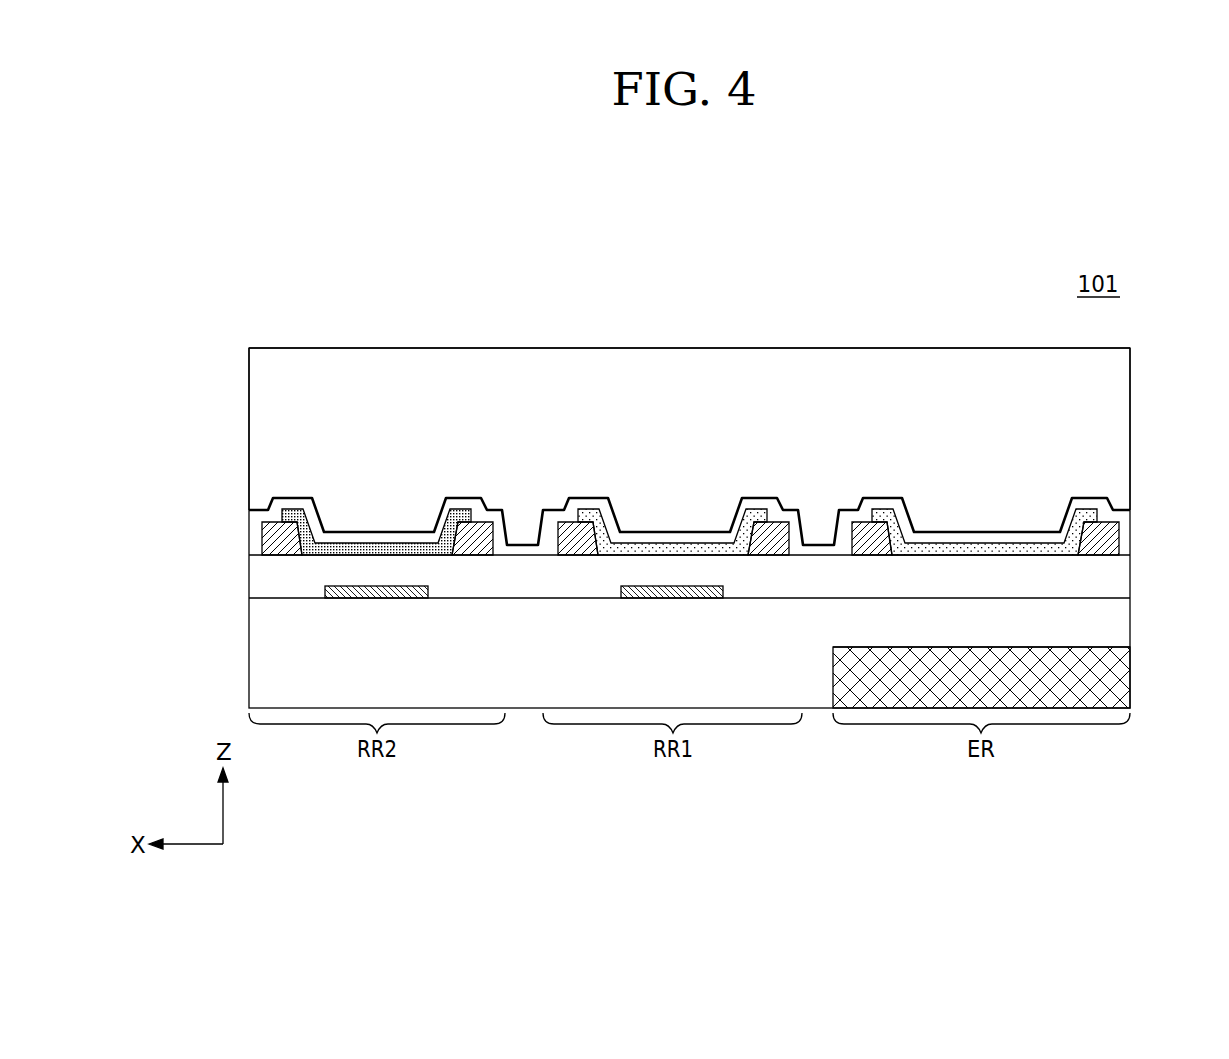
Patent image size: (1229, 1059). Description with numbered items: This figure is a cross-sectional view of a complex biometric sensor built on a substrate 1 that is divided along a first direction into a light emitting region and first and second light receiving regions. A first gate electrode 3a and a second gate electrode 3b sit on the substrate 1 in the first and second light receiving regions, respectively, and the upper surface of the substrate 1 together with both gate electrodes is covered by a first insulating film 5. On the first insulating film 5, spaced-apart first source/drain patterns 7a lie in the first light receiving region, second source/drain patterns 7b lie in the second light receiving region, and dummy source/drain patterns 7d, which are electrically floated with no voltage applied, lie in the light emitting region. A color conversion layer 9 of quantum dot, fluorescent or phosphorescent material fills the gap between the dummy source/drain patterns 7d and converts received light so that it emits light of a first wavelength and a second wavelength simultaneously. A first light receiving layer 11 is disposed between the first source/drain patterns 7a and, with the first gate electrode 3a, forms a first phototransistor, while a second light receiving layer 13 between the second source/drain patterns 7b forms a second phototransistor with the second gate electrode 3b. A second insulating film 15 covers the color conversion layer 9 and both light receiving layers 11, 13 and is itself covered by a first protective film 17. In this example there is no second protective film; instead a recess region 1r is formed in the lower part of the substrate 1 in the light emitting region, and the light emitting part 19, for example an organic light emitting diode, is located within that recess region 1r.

The substrate 1 is at (258, 650).
The recess region 1r is at (897, 647).
The first gate electrode 3a is at (674, 592).
The second gate electrode 3b is at (378, 592).
The first insulating film 5 is at (1122, 578).
The first source/drain patterns 7a is at (574, 528).
The second source/drain patterns 7b is at (273, 528).
The dummy source/drain patterns 7d is at (866, 528).
The color conversion layer 9 is at (981, 548).
The first light receiving layer 11 is at (672, 548).
The second light receiving layer 13 is at (376, 548).
The second insulating film 15 is at (1122, 515).
The first protective film 17 is at (1122, 425).
The light emitting part 19 is at (1120, 683).